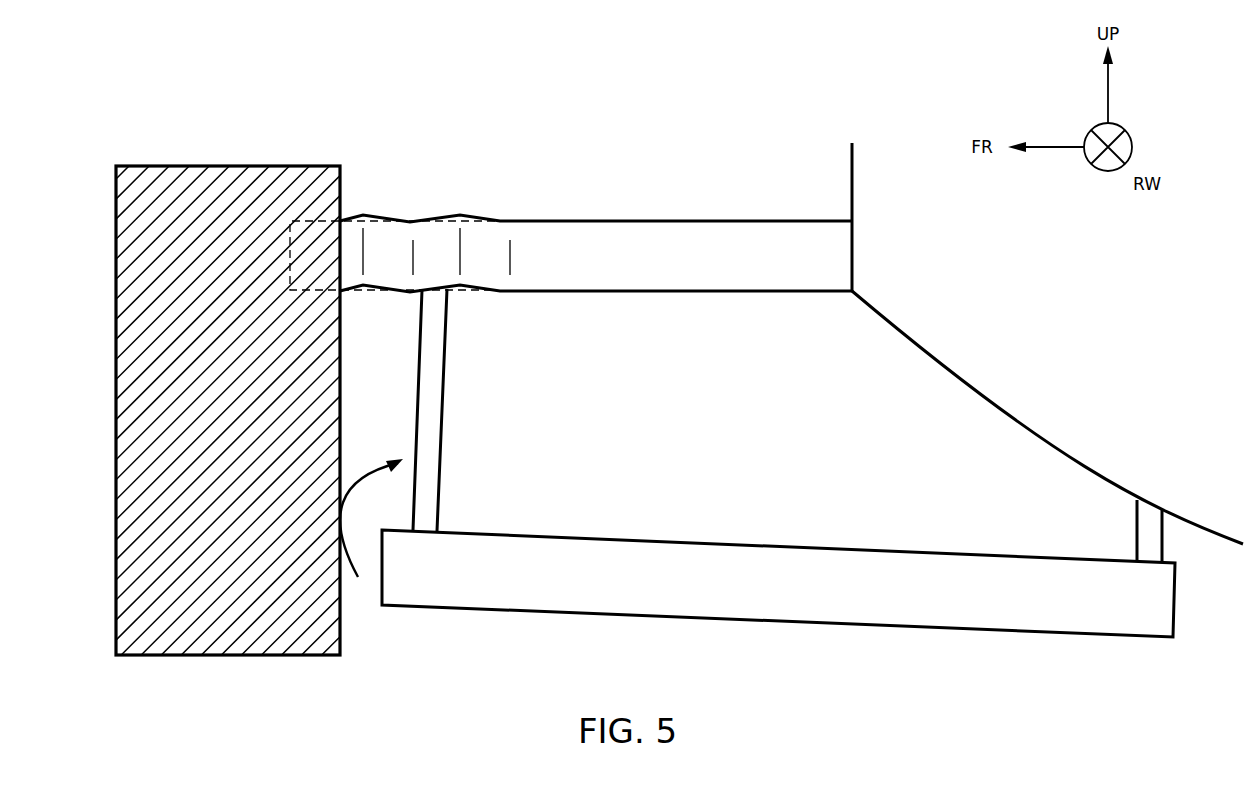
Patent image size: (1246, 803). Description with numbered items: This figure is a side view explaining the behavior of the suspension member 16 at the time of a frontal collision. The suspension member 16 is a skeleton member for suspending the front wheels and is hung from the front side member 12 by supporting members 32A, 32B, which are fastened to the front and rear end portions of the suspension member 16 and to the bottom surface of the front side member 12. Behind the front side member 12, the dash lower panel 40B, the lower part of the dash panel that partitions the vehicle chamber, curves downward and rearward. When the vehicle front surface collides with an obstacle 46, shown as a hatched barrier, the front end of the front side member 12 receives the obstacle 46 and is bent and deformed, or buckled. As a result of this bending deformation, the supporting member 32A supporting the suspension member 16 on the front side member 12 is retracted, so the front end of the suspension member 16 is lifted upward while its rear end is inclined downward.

The front side member 12 is at (620, 220).
The suspension member 16 is at (578, 540).
The supporting member 32A is at (443, 427).
The supporting member 32B is at (1135, 530).
The dash lower panel 40B is at (928, 357).
The obstacle 46 is at (208, 165).